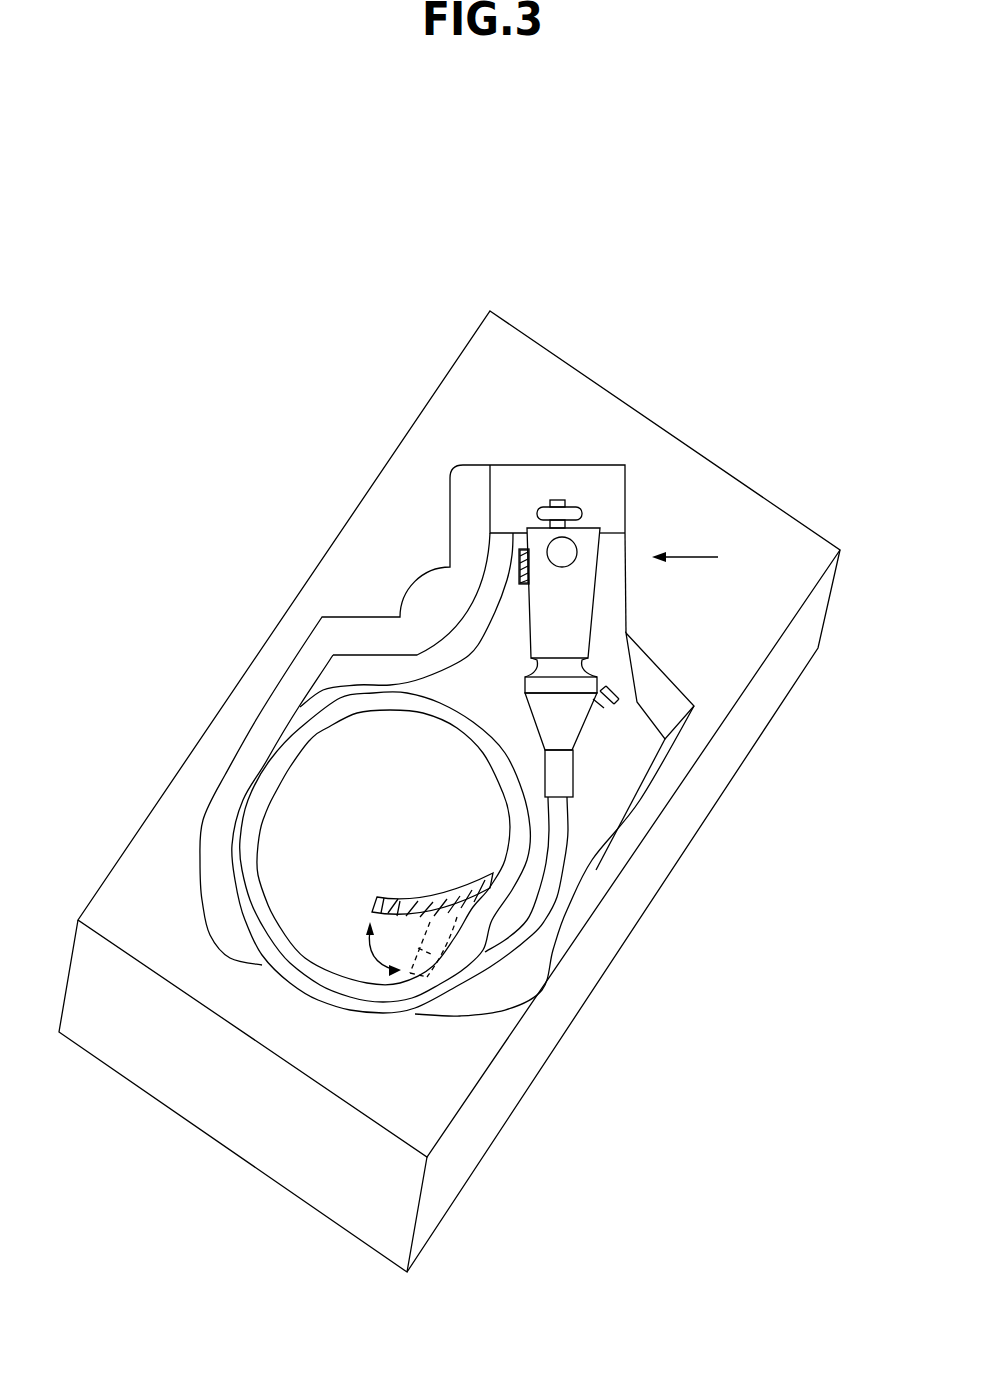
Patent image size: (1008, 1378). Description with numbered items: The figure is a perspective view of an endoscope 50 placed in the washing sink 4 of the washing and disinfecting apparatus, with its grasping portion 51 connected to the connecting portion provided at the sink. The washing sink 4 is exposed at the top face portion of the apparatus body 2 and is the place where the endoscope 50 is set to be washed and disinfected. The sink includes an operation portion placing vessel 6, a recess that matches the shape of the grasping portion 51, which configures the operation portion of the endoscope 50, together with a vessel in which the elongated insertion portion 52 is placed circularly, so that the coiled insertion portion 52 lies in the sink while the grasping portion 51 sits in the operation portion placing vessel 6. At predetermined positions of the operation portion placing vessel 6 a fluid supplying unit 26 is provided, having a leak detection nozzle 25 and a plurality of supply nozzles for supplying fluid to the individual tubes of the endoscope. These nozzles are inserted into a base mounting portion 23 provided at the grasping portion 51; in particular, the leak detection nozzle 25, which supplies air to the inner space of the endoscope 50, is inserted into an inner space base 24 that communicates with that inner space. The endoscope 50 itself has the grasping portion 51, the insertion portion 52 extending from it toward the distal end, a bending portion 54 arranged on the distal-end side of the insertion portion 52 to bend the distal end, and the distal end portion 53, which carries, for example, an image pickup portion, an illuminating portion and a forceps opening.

The apparatus body 2 is at (340, 446).
The washing sink 4 is at (560, 380).
The operation portion placing vessel 6 is at (613, 608).
The base mounting portion 23 is at (483, 569).
The inner space base 24 is at (518, 550).
The leak detection nozzle 25 is at (513, 553).
The fluid supplying unit 26 is at (487, 490).
The endoscope 50 is at (565, 722).
The grasping portion 51 is at (565, 600).
The insertion portion 52 is at (428, 998).
The distal end portion 53 is at (375, 902).
The bending portion 54 is at (478, 891).